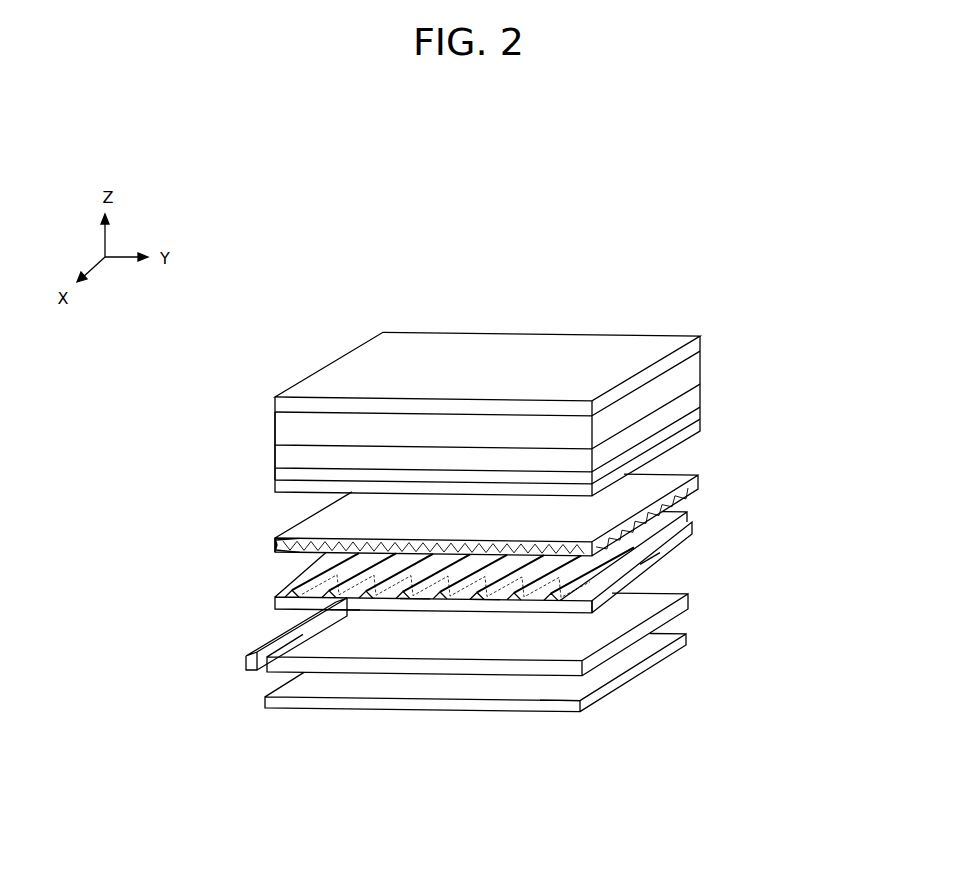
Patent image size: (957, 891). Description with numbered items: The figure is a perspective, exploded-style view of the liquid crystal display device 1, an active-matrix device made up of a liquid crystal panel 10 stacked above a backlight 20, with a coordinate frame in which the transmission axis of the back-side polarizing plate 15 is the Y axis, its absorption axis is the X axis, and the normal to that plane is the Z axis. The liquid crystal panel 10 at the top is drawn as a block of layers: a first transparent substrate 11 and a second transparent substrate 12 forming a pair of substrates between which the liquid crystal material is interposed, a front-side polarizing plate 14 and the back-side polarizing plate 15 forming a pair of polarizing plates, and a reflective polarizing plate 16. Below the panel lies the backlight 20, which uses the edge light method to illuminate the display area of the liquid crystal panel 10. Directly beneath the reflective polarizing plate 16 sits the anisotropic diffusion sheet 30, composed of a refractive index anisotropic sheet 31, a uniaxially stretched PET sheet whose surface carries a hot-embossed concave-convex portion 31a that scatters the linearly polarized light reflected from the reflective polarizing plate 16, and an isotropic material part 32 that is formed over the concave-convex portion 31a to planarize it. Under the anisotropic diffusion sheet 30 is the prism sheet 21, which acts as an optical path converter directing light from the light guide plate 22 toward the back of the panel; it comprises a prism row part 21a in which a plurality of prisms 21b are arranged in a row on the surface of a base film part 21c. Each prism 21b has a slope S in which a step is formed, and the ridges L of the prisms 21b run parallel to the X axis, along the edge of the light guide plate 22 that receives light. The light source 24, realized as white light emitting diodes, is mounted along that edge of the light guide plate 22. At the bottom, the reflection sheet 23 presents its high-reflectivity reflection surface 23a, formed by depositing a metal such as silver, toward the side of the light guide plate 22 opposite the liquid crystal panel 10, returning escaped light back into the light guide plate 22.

The liquid crystal display device 1 is at (597, 168).
The liquid crystal panel 10 is at (562, 392).
The first transparent substrate 11 is at (702, 353).
The second transparent substrate 12 is at (702, 375).
The front-side polarizing plate 14 is at (703, 336).
The back-side polarizing plate 15 is at (702, 402).
The reflective polarizing plate 16 is at (535, 414).
The backlight 20 is at (523, 609).
The prism sheet 21 is at (695, 535).
The prism row part 21a is at (486, 605).
The prism 21b is at (337, 612).
The base film part 21c is at (588, 611).
The light guide plate 22 is at (690, 613).
The reflection sheet 23 is at (663, 662).
The reflection surface 23a is at (550, 690).
The light source 24 is at (296, 622).
The anisotropic diffusion sheet 30 is at (690, 484).
The refractive index anisotropic sheet 31 is at (277, 552).
The concave-convex portion 31a is at (277, 542).
The isotropic material part 32 is at (280, 538).
The ridge L is at (652, 566).
The slope S is at (414, 600).